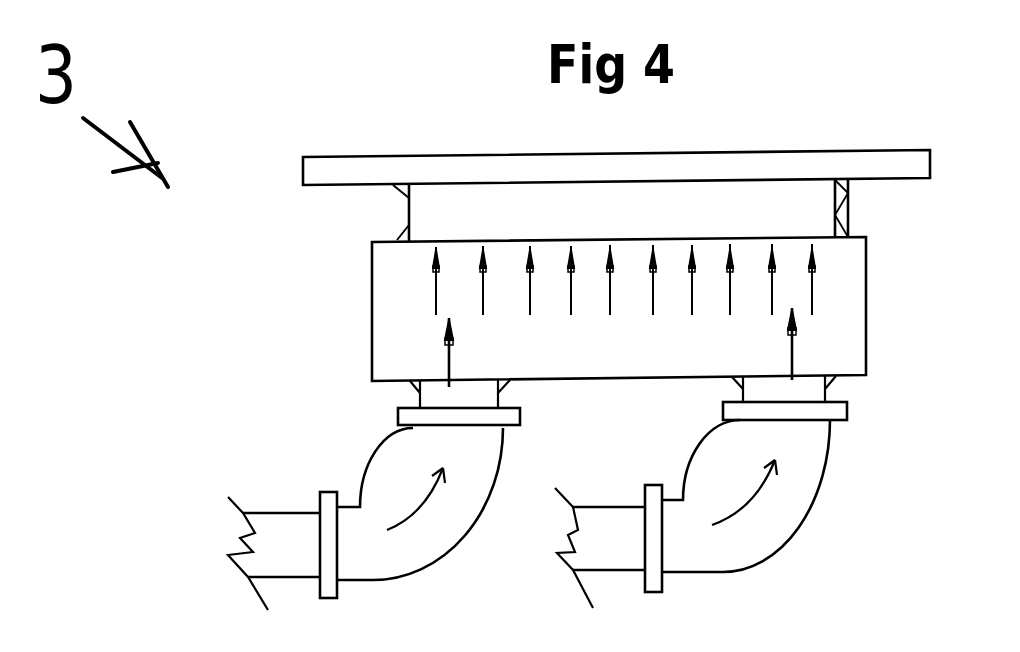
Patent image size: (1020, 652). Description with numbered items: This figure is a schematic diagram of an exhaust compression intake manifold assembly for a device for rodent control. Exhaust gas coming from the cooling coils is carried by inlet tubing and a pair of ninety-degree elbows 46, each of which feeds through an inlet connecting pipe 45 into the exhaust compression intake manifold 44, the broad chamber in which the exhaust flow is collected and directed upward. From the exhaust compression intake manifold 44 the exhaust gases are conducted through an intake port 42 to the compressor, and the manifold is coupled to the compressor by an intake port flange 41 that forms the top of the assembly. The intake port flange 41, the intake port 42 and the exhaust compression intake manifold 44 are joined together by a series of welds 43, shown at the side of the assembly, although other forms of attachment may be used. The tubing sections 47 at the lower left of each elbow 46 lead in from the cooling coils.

The intake port flange 41 is at (297, 183).
The intake port 42 is at (398, 218).
The welds 43 is at (860, 208).
The exhaust compression intake manifold 44 is at (365, 303).
The inlet connecting pipes 45 is at (417, 398).
The 90° elbows 46 is at (387, 467).
The exhaust pipe 47 is at (278, 507).